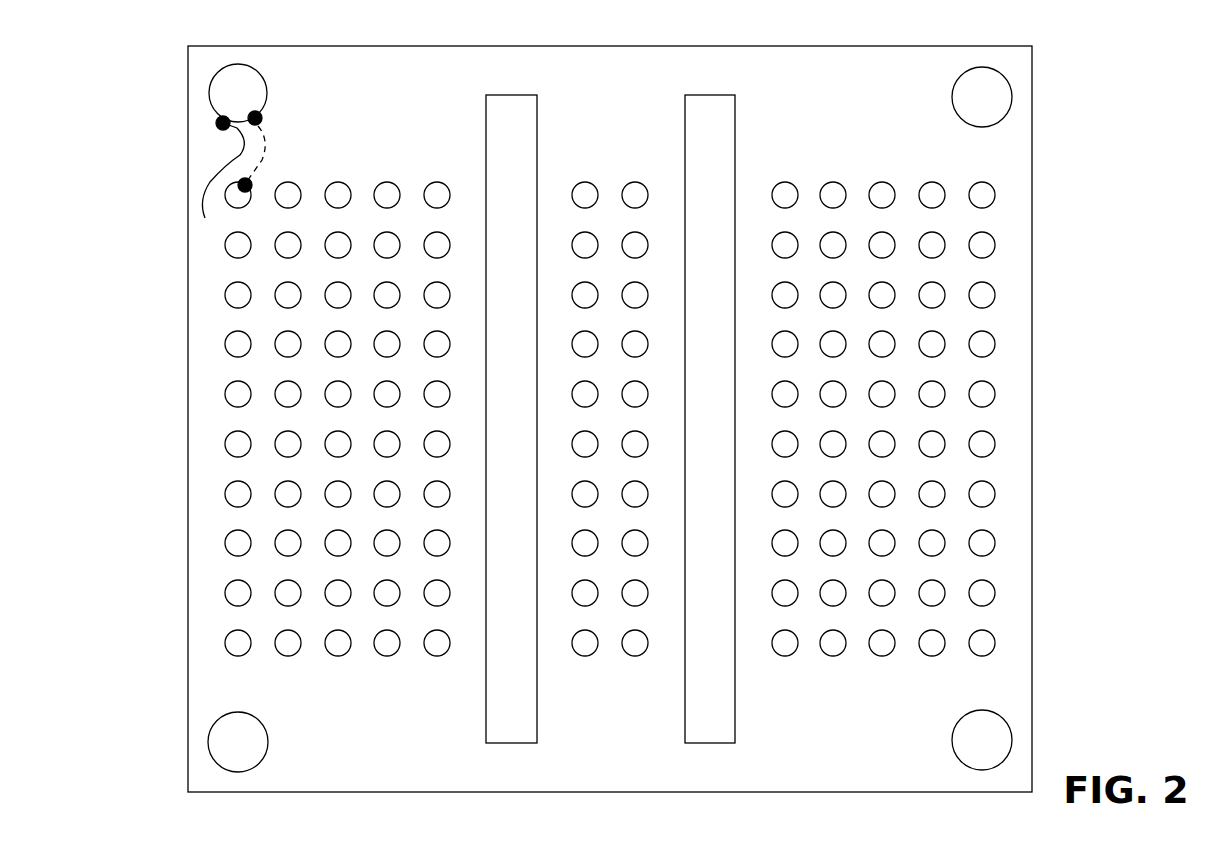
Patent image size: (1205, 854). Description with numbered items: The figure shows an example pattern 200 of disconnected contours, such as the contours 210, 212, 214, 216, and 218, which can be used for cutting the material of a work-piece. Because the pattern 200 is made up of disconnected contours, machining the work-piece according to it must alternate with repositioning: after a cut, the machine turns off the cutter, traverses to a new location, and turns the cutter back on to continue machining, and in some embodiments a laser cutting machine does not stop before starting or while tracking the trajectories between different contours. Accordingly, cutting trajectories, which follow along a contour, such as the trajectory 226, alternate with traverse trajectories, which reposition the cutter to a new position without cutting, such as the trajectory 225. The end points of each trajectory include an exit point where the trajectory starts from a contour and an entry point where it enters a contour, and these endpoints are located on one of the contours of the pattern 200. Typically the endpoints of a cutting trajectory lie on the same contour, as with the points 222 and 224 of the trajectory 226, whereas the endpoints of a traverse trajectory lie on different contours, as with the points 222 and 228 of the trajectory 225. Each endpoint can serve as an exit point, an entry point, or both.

The pattern 200 is at (675, 450).
The contour 210 is at (388, 185).
The contour 212 is at (432, 185).
The contour 214 is at (583, 185).
The contour 216 is at (882, 182).
The contour 218 is at (972, 67).
The point 222 is at (262, 118).
The point 224 is at (223, 123).
The traverse trajectory 225 is at (268, 145).
The cutting trajectory 226 is at (205, 218).
The point 228 is at (245, 185).